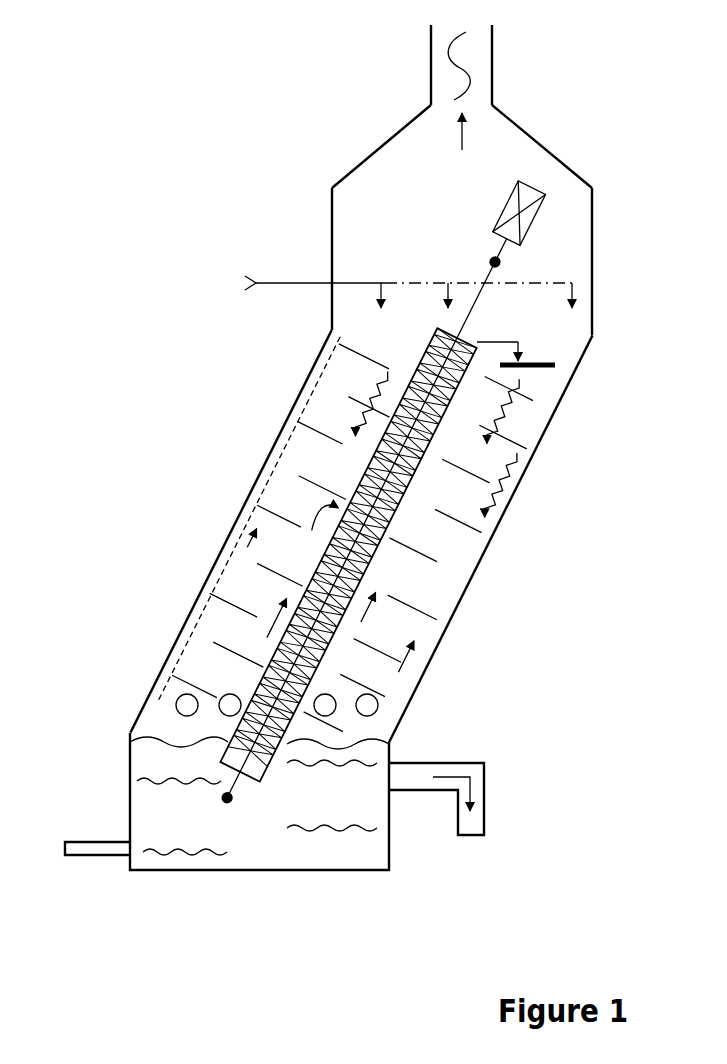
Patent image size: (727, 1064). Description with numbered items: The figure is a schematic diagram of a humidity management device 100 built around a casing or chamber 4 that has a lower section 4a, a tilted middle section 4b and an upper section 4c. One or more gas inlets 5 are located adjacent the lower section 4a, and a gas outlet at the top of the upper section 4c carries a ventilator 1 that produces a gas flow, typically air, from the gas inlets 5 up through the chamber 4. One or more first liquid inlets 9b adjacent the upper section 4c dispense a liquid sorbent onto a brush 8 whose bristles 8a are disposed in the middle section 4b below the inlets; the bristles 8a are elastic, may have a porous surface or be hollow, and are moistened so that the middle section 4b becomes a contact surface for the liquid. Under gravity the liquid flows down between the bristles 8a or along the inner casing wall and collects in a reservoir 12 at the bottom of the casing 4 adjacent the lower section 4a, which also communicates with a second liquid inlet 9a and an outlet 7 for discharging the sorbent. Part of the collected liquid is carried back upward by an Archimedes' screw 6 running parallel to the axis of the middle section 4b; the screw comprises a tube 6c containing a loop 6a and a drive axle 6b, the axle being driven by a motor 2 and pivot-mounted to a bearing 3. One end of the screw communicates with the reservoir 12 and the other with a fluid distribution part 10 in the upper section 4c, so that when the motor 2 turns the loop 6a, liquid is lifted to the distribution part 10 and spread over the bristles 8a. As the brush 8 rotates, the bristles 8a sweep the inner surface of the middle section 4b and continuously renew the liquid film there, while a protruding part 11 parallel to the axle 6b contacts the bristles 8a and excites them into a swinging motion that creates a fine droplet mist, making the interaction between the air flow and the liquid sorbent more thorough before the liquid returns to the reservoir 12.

The ventilator 1 is at (483, 50).
The humidity management device 100 is at (355, 152).
The upper section 4c is at (362, 205).
The motor 2 is at (535, 215).
The bearing 3 is at (495, 262).
The first liquid inlets 9b is at (243, 283).
The fluid distribution part 10 is at (543, 357).
The Archimedes' screw 6 is at (317, 567).
The protruding part 11 is at (190, 638).
The middle section 4b is at (430, 588).
The bristles 8a is at (317, 427).
The tube 6c is at (363, 472).
The drive axle 6b is at (460, 323).
The brush 8 is at (452, 513).
The loop 6a is at (492, 400).
The casing 4 is at (130, 787).
The lower section 4a is at (277, 827).
The reservoir 12 is at (357, 845).
The gas inlets 5 is at (377, 707).
The outlet 7 is at (484, 785).
The second liquid inlet 9a is at (88, 857).